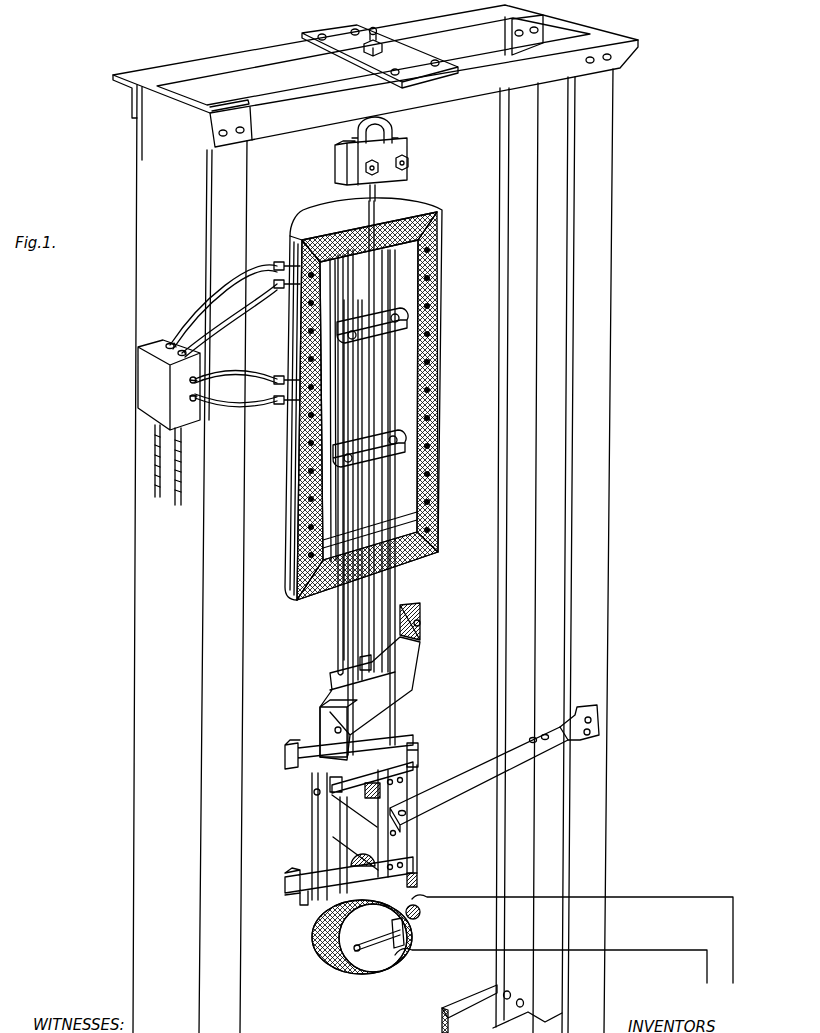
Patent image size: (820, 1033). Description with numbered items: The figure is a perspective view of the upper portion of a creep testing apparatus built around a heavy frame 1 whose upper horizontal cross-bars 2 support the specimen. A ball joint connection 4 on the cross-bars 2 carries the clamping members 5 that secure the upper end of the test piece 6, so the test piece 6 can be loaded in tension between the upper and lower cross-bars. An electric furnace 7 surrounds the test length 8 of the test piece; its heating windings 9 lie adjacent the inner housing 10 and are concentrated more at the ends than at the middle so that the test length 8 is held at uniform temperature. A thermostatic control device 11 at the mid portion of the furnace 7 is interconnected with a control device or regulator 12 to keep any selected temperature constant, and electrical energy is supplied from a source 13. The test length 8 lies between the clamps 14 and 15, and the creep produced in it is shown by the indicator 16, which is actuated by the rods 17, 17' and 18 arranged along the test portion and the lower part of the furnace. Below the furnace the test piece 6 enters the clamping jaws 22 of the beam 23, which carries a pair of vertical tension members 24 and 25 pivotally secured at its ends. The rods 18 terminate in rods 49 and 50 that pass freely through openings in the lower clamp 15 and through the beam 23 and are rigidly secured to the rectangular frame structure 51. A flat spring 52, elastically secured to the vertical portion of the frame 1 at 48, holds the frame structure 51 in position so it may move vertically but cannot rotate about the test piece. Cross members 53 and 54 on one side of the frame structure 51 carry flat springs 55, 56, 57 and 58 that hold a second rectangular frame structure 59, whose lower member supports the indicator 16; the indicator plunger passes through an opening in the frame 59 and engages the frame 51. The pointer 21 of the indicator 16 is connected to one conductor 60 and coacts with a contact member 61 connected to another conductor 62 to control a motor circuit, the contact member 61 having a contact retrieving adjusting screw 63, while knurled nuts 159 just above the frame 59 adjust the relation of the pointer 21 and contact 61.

The frame 1 is at (605, 380).
The upper horizontal cross-bars 2 is at (307, 88).
The ball joint connection 4 is at (400, 128).
The clamping members 5 is at (335, 167).
The test piece 6 is at (380, 197).
The electric furnace 7 is at (443, 295).
The test length 8 is at (374, 397).
The heating windings 9 is at (440, 382).
The inner housing 10 is at (417, 270).
The thermostatic control device 11 is at (287, 422).
The control device or regulator 12 is at (158, 399).
The source 13 is at (173, 493).
The clamp 14 is at (380, 320).
The lower clamp 15 is at (393, 432).
The indicator 16 is at (322, 952).
The rod 17 is at (320, 465).
The rod 17' is at (378, 553).
The rod 18 is at (356, 372).
The pointer 21 is at (393, 935).
The clamping jaws 22 is at (360, 668).
The beam 23 is at (417, 608).
The vertical tension member 24 is at (408, 690).
The vertical tension member 25 is at (327, 730).
The attachment point 48 is at (600, 722).
The rod 49 is at (390, 497).
The rod 50 is at (352, 632).
The rectangular frame structure 51 is at (395, 792).
The flat spring 52 is at (440, 803).
The cross member 53 is at (287, 767).
The cross member 54 is at (295, 860).
The flat spring 55 is at (307, 772).
The flat spring 56 is at (297, 900).
The flat spring 57 is at (415, 883).
The flat spring 58 is at (403, 742).
The second rectangular frame structure 59 is at (410, 880).
The conductor 60 is at (625, 947).
The contact member 61 is at (425, 928).
The conductor 62 is at (733, 957).
The contact retrieving adjusting screw 63 is at (420, 912).
The knurled nuts 159 is at (320, 907).